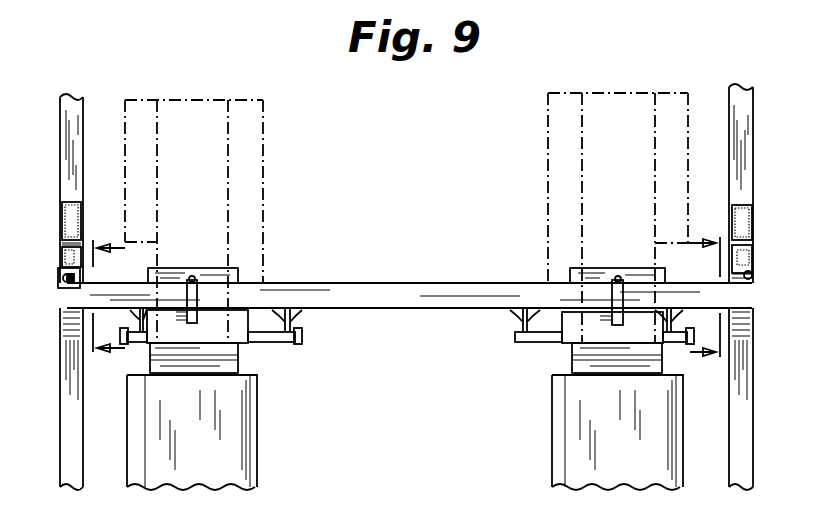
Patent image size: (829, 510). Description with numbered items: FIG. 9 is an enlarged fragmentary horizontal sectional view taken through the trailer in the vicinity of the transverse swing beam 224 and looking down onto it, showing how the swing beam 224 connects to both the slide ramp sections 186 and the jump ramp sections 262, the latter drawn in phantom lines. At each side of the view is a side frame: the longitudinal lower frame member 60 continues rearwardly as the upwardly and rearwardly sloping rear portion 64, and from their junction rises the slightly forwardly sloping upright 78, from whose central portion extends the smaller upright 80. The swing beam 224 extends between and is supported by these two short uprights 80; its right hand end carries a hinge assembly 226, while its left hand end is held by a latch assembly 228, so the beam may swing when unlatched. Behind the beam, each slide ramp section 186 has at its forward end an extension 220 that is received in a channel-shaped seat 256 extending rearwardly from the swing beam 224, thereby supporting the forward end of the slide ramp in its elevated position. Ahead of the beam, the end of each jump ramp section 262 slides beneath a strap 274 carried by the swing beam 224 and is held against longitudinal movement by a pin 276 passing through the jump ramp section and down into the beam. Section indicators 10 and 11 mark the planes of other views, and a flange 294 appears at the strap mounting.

The section line 10 is at (109, 305).
The section line 11 is at (704, 304).
The longitudinal lower frame member 60 is at (62, 118).
The rear portion 64 is at (62, 430).
The upright 78 is at (62, 210).
The smaller upright 80 is at (62, 258).
The slide ramp section 186 is at (256, 430).
The extension 220 is at (172, 368).
The swing beam 224 is at (403, 273).
The hinge assembly 226 is at (760, 284).
The latch assembly 228 is at (47, 284).
The seat 256 is at (240, 357).
The jump ramp section 262 is at (263, 170).
The strap 274 is at (198, 322).
The pin 276 is at (193, 277).
The mounting flange 294 is at (292, 346).